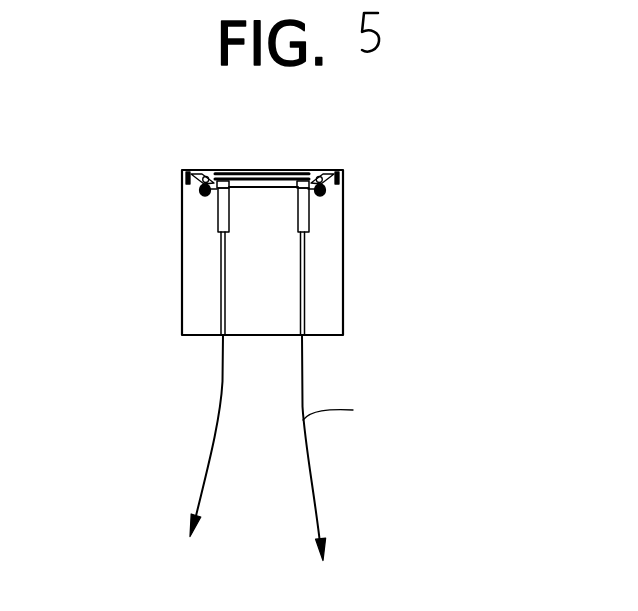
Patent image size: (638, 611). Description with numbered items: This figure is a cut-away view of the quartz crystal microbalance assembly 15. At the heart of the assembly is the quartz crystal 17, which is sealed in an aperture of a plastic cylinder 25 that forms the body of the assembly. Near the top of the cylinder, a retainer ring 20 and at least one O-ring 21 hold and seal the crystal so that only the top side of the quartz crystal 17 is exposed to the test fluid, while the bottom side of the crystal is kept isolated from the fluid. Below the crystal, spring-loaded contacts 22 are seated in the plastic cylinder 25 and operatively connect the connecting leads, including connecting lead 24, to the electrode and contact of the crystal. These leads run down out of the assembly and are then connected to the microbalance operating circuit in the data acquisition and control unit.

The quartz crystal microbalance assembly 15 is at (174, 255).
The quartz crystal 17 is at (234, 167).
The retainer ring 20 is at (308, 163).
The O-ring 21 is at (314, 183).
The spring-loaded contacts 22 is at (303, 214).
The connecting lead 24 is at (197, 479).
The plastic cylinder 25 is at (311, 282).